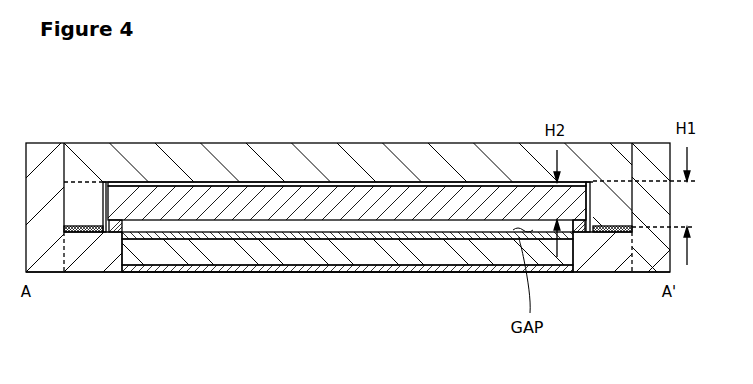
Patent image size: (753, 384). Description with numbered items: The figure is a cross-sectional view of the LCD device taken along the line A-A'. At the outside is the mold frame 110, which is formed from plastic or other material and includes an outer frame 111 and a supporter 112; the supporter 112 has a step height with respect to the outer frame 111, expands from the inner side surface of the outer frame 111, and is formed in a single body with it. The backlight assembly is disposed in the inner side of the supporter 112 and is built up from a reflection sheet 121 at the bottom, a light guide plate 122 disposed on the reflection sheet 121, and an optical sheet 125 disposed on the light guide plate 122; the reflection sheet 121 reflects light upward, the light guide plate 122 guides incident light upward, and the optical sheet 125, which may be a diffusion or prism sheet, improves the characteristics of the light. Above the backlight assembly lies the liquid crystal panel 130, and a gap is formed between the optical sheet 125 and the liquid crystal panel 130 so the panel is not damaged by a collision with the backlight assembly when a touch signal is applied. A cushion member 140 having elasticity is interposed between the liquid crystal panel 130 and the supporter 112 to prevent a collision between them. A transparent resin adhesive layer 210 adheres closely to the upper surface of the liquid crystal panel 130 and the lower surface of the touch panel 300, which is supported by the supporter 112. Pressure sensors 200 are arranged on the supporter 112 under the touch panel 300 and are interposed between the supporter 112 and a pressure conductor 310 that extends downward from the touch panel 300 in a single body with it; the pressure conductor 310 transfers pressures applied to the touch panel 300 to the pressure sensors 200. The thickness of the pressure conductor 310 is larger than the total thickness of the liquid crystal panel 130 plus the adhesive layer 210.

The mold frame 110 is at (29, 348).
The outer frame 111 is at (45, 264).
The supporter 112 is at (107, 264).
The reflection sheet 121 is at (325, 272).
The light guide plate 122 is at (422, 252).
The optical sheet 125 is at (237, 239).
The liquid crystal panel 130 is at (562, 220).
The cushion member 140 is at (113, 203).
The pressure sensors 200 is at (75, 226).
The adhesive layer 210 is at (367, 183).
The touch panel 300 is at (477, 155).
The pressure conductor 310 is at (612, 195).